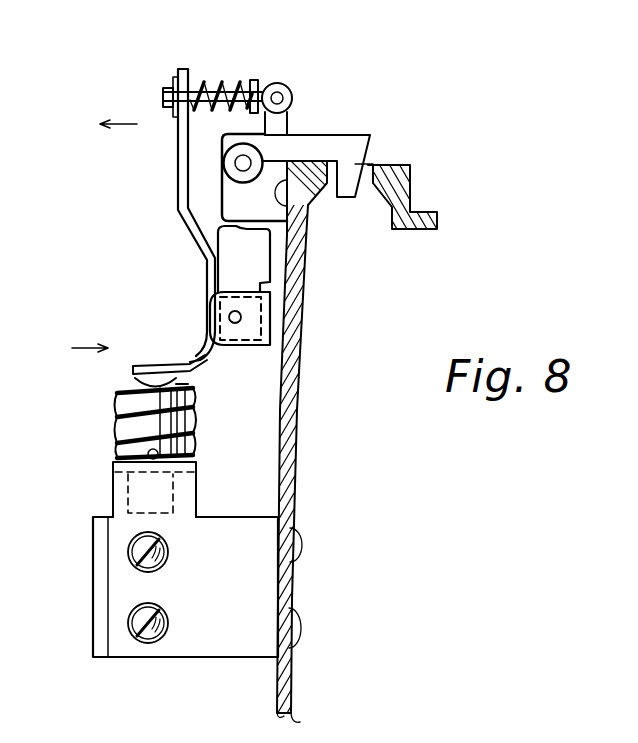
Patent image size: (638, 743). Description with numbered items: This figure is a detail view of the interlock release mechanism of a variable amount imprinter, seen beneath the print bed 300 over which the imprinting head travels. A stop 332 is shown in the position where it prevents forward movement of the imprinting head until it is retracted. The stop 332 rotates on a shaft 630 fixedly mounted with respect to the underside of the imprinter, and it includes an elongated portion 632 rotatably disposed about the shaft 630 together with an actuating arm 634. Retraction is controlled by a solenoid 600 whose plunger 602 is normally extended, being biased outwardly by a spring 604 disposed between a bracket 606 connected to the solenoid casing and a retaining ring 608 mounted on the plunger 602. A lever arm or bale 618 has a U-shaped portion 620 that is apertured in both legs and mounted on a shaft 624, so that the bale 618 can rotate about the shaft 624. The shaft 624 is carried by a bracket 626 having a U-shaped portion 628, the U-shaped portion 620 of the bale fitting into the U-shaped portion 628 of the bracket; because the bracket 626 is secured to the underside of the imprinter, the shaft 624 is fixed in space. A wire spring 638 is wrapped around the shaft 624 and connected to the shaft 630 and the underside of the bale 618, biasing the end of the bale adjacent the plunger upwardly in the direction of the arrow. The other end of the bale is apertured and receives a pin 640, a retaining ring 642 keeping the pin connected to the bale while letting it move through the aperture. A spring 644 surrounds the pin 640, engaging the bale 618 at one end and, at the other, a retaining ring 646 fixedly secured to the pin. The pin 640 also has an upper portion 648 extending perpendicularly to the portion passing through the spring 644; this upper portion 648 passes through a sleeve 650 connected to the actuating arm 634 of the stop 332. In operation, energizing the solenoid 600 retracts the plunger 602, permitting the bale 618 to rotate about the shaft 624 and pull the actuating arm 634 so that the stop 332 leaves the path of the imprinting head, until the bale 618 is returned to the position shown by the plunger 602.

The print bed 300 is at (296, 462).
The stop 332 is at (345, 201).
The solenoid 600 is at (138, 586).
The plunger 602 is at (188, 431).
The spring 604 is at (118, 416).
The bracket 606 is at (118, 492).
The retaining ring 608 is at (126, 378).
The lever arm or bale 618 is at (188, 237).
The U-shaped portion 620 is at (274, 303).
The shaft 624 is at (241, 318).
The bracket 626 is at (252, 250).
The U-shaped portion 628 is at (238, 343).
The shaft 630 is at (238, 163).
The elongated portion 632 is at (292, 131).
The actuating arm 634 is at (290, 110).
The wire spring 638 is at (188, 359).
The pin 640 is at (205, 80).
The retaining ring 642 is at (175, 78).
The spring 644 is at (236, 84).
The retaining ring 646 is at (260, 82).
The upper portion 648 is at (294, 92).
The sleeve 650 is at (292, 80).